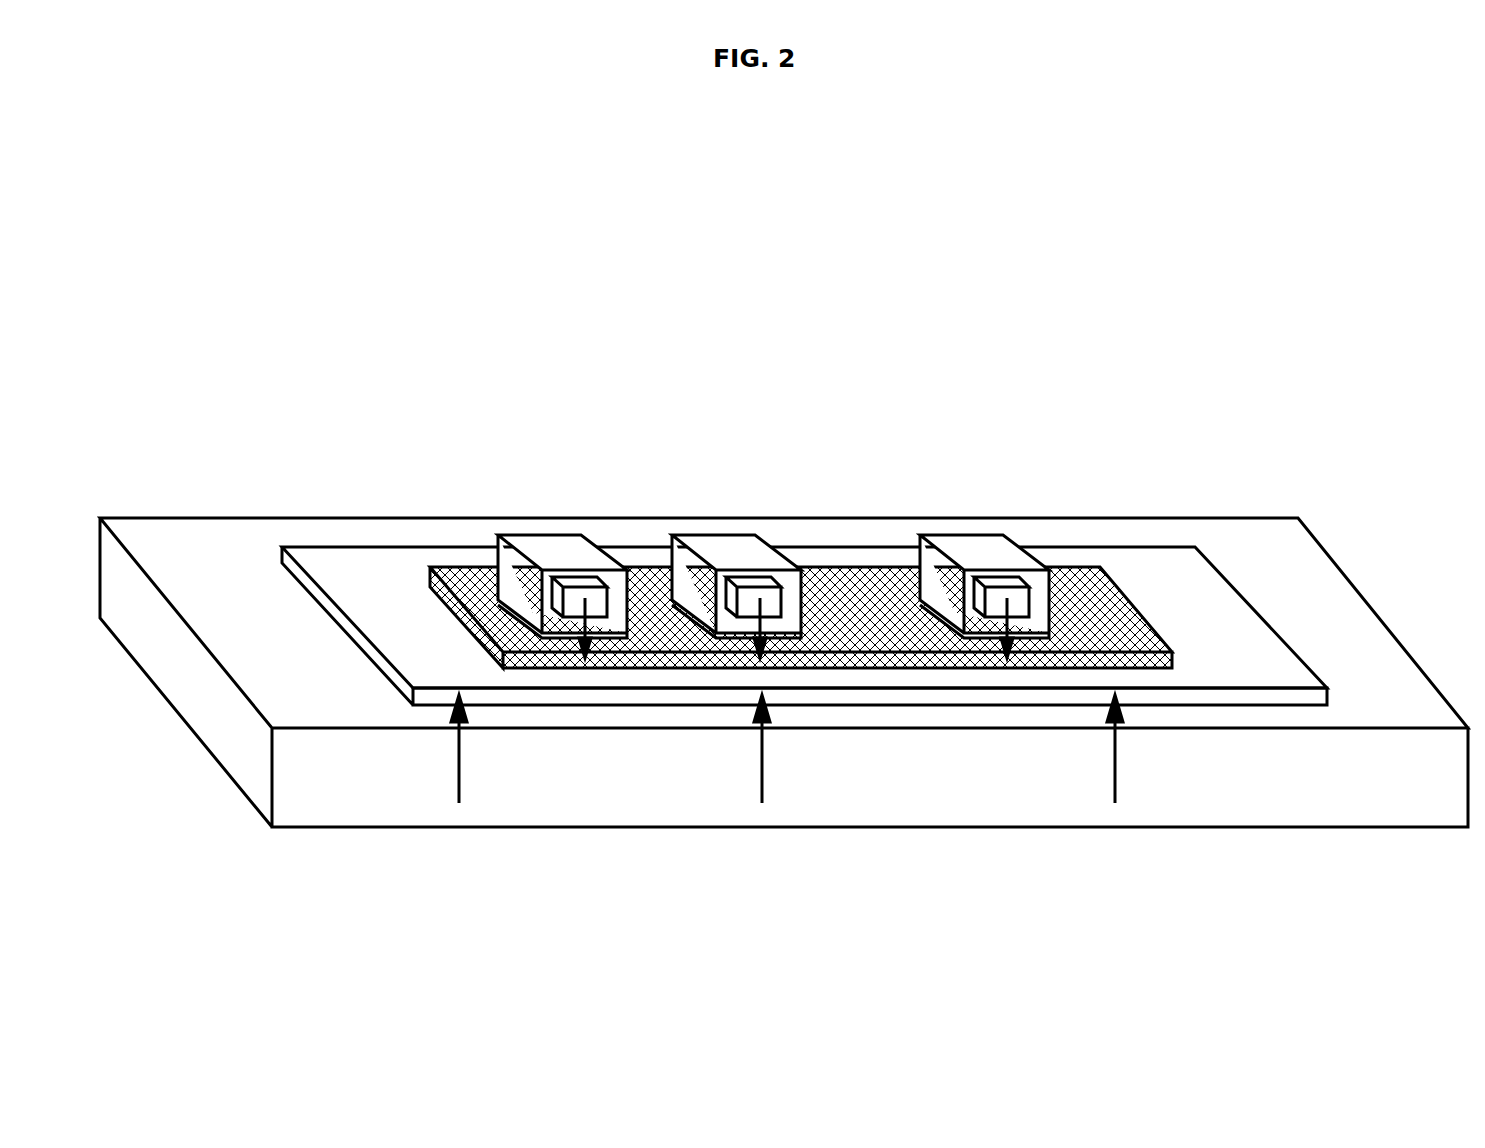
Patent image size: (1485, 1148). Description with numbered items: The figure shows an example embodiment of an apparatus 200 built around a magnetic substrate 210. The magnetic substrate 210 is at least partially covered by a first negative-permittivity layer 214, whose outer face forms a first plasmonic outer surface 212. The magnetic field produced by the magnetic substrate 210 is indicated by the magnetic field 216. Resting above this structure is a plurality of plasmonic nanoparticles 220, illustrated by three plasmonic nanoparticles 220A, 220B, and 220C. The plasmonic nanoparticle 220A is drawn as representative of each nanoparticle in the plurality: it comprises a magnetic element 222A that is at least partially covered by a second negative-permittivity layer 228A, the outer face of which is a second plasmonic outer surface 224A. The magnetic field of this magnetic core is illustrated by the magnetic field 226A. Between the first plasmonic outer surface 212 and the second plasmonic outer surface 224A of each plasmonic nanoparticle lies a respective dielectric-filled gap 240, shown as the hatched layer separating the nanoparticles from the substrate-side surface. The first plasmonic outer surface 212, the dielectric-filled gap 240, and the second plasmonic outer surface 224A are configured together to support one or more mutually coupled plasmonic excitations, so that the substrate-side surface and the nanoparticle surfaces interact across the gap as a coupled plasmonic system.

The apparatus 200 is at (250, 106).
The magnetic substrate 210 is at (377, 827).
The first plasmonic outer surface 212 is at (417, 563).
The first negative-permittivity layer 214 is at (375, 573).
The magnetic field 216 is at (760, 775).
The plurality of plasmonic nanoparticles 220 is at (1010, 275).
The plasmonic nanoparticle 220A is at (737, 533).
The plasmonic nanoparticle 220B is at (558, 533).
The plasmonic nanoparticle 220C is at (983, 533).
The magnetic element 222A is at (790, 598).
The second plasmonic outer surface 224A is at (697, 620).
The magnetic field 226A is at (754, 625).
The second negative-permittivity layer 228A is at (688, 603).
The dielectric-filled gap 240 is at (1088, 586).